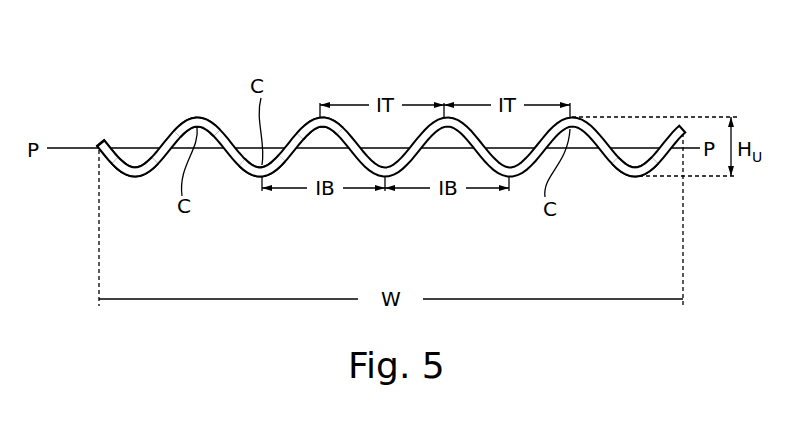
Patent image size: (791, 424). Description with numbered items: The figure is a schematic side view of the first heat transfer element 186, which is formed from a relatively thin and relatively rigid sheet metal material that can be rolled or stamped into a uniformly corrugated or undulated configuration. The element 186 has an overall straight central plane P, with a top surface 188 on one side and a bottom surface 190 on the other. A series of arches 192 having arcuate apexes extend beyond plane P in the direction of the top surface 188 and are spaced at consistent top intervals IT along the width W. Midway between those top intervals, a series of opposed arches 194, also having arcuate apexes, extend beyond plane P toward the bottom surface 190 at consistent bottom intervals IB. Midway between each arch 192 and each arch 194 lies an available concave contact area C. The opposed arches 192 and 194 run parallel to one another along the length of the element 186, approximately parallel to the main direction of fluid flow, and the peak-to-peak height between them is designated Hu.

The first heat transfer element 186 is at (98, 138).
The top surface 188 is at (168, 132).
The bottom surface 190 is at (137, 178).
The arches 192 is at (197, 117).
The opposed arches 194 is at (248, 178).